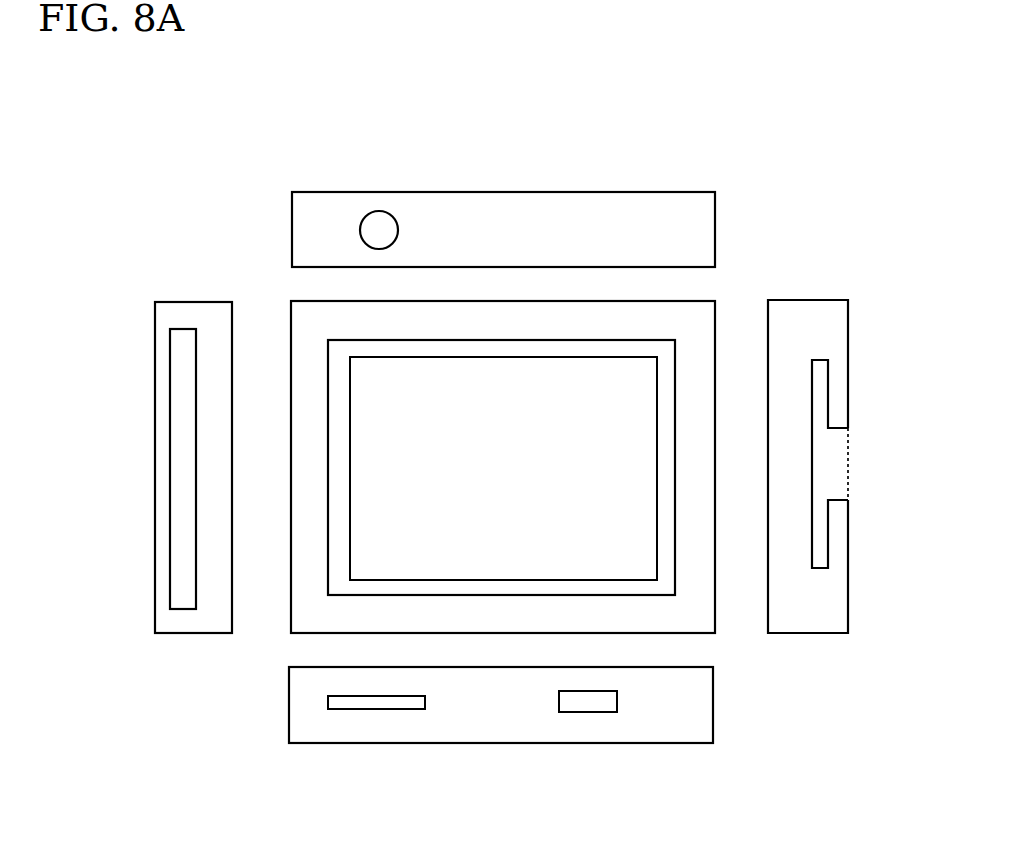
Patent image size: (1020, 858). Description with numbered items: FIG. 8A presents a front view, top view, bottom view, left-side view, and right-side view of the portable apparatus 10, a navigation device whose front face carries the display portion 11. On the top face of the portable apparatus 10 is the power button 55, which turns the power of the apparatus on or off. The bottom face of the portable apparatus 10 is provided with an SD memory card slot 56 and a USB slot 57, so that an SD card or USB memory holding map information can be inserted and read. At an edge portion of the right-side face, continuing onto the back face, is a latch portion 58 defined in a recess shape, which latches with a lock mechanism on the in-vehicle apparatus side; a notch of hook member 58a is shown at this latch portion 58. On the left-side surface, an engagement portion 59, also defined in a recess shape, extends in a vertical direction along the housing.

The portable apparatus 10 is at (515, 108).
The display portion 11 is at (637, 595).
The power button 55 is at (384, 212).
The SD memory card slot 56 is at (358, 703).
The USB slot 57 is at (590, 703).
The latch portion 58 is at (837, 472).
The notch of hook member 58a is at (840, 430).
The engagement portion 59 is at (177, 407).